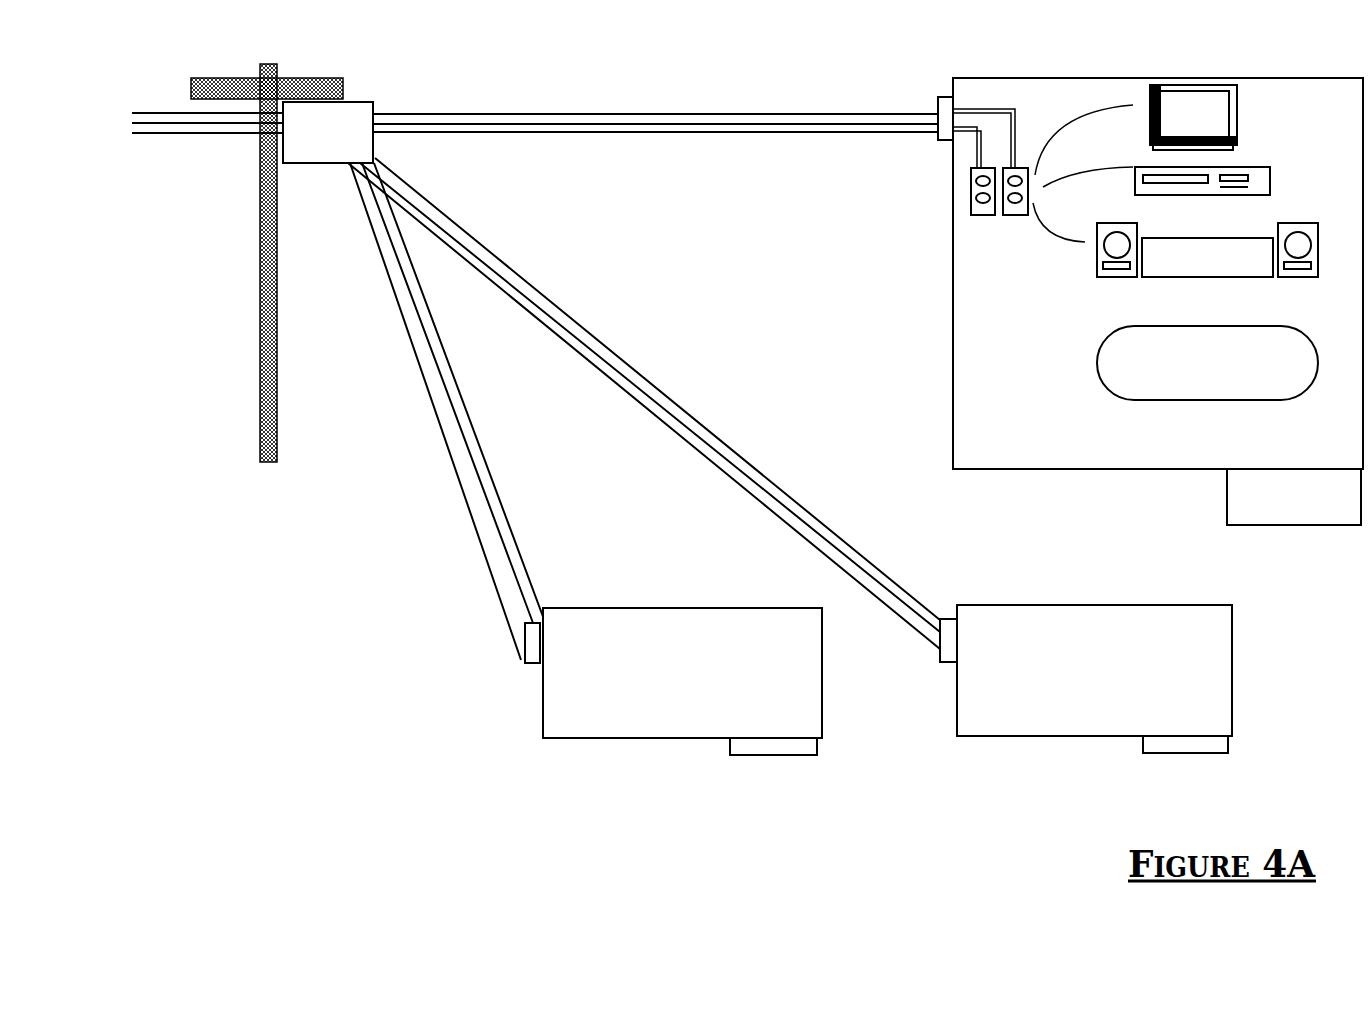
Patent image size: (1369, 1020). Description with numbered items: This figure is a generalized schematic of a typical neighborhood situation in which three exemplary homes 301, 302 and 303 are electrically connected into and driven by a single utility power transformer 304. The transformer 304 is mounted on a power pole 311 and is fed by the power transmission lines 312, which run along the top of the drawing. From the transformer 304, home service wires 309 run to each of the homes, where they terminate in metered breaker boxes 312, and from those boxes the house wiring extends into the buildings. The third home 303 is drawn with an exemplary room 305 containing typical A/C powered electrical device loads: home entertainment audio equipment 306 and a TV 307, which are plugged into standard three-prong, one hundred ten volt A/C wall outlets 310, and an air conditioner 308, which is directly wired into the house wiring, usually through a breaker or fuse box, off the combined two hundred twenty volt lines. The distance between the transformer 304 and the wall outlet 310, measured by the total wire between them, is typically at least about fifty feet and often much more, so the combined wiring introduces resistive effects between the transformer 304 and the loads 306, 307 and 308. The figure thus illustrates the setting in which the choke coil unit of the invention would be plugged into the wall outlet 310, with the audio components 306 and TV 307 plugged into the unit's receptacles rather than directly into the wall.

The home 301 is at (705, 681).
The home 302 is at (1126, 682).
The third home 303 is at (1018, 456).
The utility power transformer 304 is at (353, 144).
The room 305 is at (1323, 196).
The audio equipment 306 is at (1226, 269).
The TV 307 is at (1293, 126).
The air conditioner 308 is at (752, 762).
The home service wires 309 is at (605, 145).
The A/C wall outlets 310 is at (1103, 335).
The power pole 311 is at (243, 451).
The power transmission lines / metered breaker boxes 312 is at (218, 140).